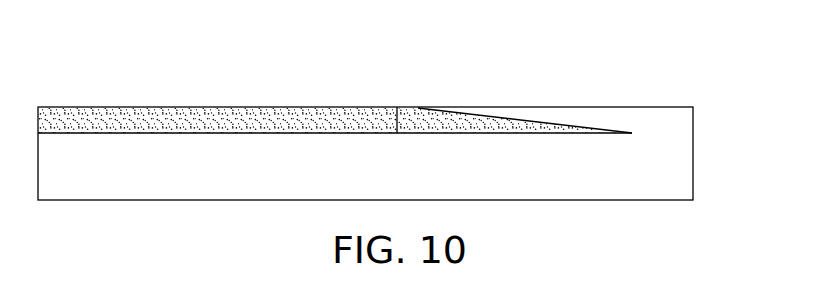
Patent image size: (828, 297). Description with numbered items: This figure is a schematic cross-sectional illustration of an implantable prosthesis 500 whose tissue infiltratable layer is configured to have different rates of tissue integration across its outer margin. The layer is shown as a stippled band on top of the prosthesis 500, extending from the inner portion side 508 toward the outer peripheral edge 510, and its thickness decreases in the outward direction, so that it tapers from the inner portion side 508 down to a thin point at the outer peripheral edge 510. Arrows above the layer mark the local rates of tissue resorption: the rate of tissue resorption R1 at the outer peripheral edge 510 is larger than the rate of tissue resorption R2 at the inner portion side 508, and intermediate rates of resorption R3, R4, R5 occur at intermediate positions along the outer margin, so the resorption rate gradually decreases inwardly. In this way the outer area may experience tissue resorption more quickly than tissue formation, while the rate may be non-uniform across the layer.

The prosthesis 500 is at (98, 119).
The inner portion side 508 is at (394, 120).
The outer peripheral edge 510 is at (630, 133).
The rate of tissue resorption at the outer peripheral edge R1 is at (627, 88).
The rate of tissue resorption at the inner portion side R2 is at (397, 88).
The intermediate rate of resorption R3 is at (575, 88).
The intermediate rate of resorption R4 is at (513, 88).
The intermediate rate of resorption R5 is at (454, 88).